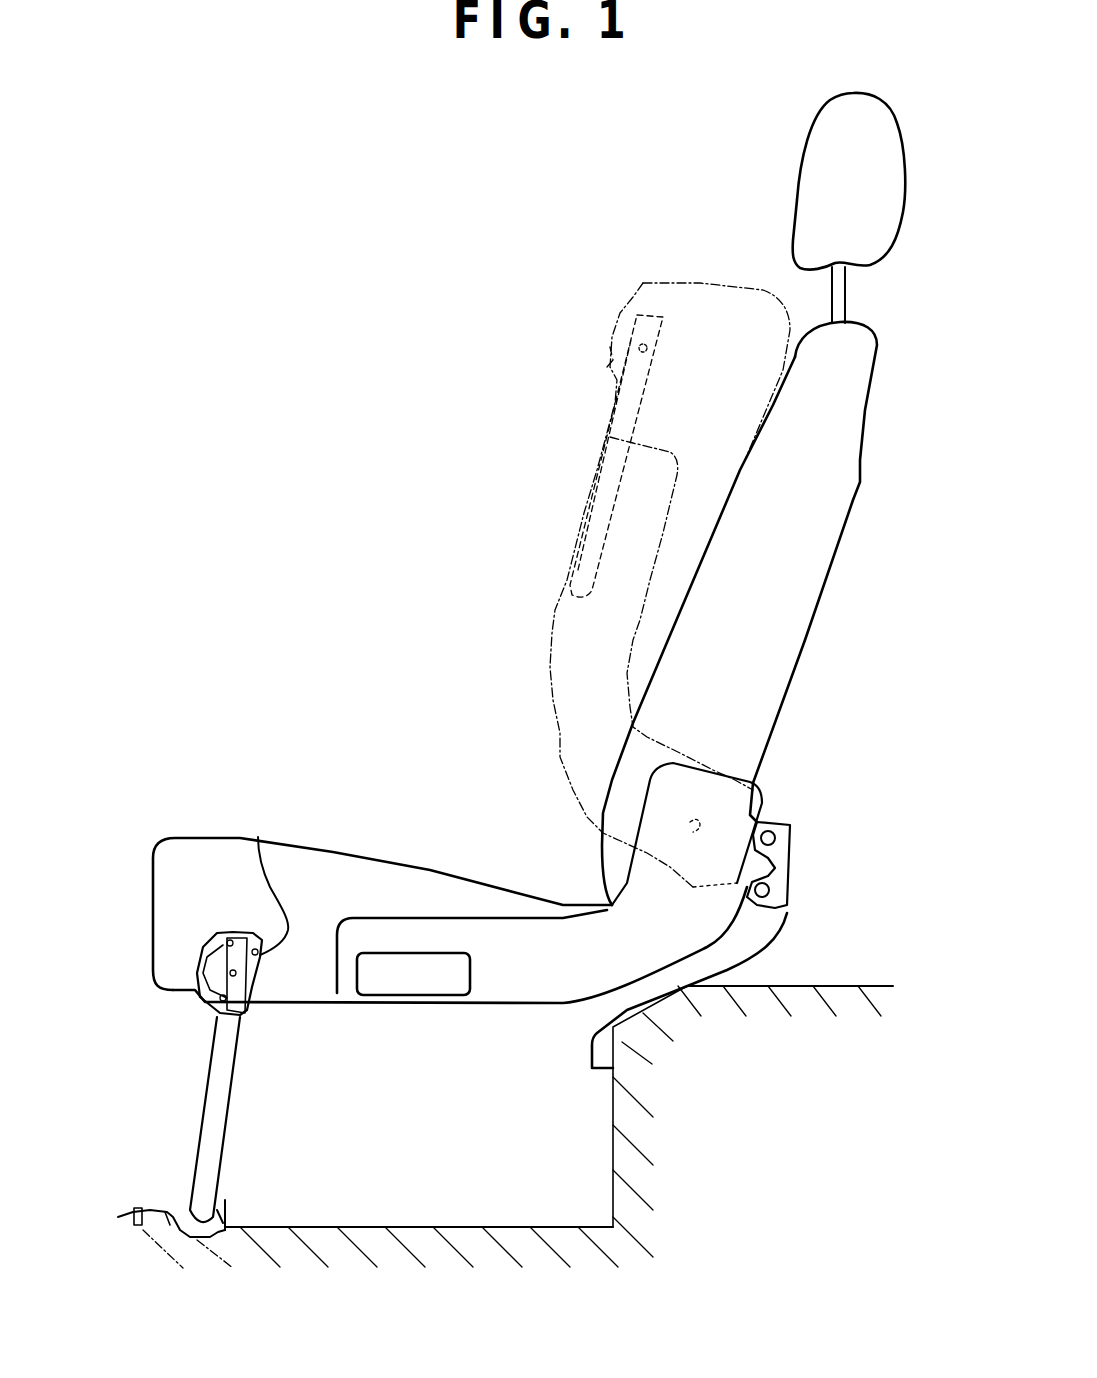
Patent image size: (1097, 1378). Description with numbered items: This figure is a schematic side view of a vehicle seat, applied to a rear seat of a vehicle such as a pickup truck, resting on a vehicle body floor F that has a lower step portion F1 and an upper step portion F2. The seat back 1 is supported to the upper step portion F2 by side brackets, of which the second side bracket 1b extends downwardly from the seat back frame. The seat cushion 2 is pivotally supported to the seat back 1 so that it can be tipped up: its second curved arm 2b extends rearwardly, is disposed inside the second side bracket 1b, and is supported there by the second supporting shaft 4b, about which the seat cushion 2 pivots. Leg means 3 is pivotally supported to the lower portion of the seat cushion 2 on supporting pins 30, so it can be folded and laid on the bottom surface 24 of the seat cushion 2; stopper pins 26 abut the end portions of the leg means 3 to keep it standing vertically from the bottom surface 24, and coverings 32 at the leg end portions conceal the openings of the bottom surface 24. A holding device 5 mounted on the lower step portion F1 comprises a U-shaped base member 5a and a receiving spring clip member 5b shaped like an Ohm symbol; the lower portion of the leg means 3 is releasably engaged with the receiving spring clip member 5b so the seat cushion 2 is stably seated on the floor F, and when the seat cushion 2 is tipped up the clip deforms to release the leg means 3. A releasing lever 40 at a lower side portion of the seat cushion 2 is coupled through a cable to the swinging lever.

The seat back 1 is at (810, 623).
The second side bracket 1b is at (790, 823).
The seat cushion 2 is at (700, 283).
The second curved arm 2b is at (507, 933).
The leg means 3 is at (570, 583).
The second supporting shaft 4b is at (698, 829).
The holding device 5 is at (219, 1155).
The base member 5a is at (227, 1208).
The receiving spring clip member 5b is at (173, 1207).
The bottom surface 24 is at (310, 998).
The stopper pin 26 is at (258, 837).
The supporting pin 30 is at (233, 973).
The covering 32 is at (210, 953).
The releasing lever 40 is at (412, 990).
The floor F is at (790, 986).
The lower step portion F1 is at (412, 1227).
The upper step portion F2 is at (850, 986).